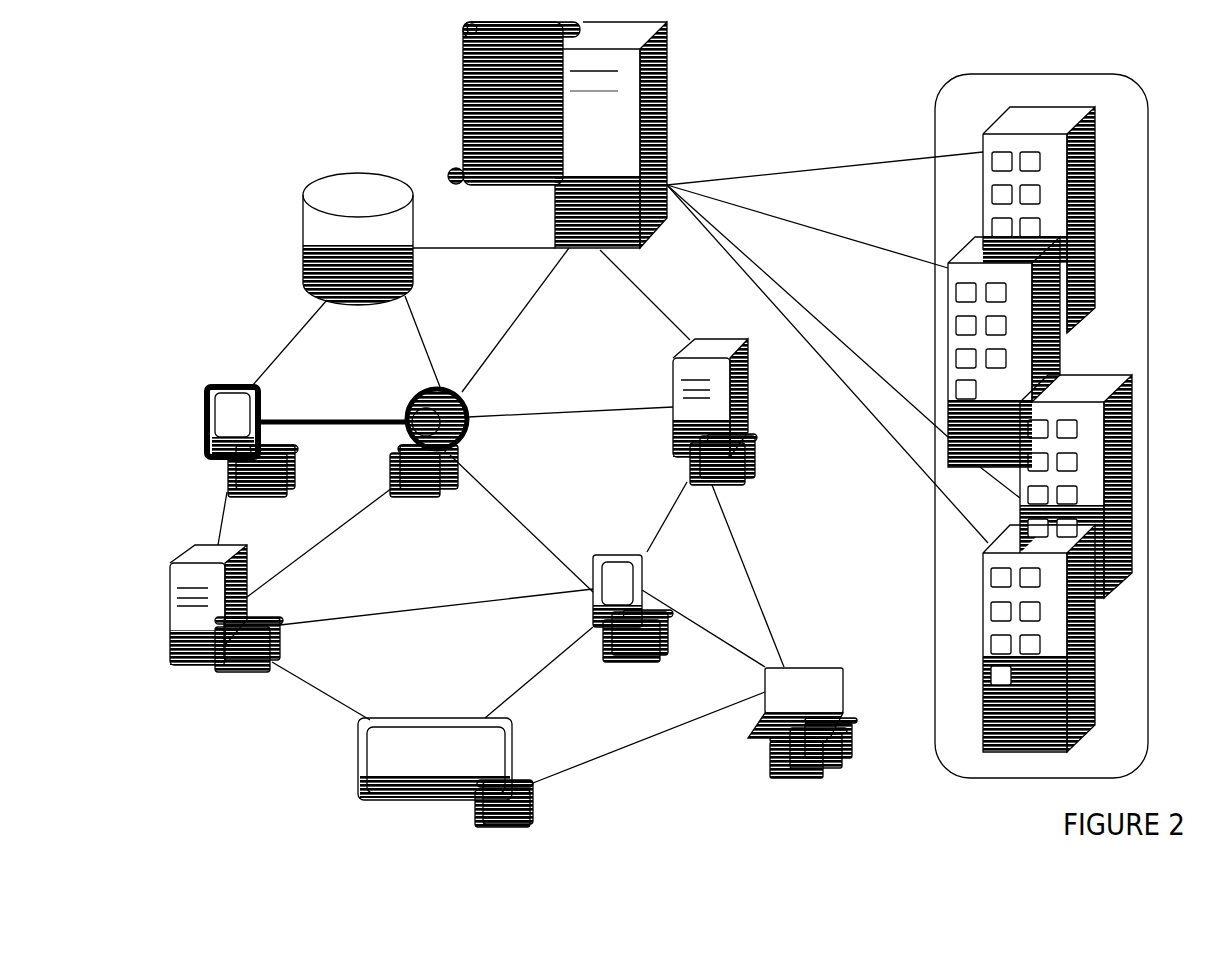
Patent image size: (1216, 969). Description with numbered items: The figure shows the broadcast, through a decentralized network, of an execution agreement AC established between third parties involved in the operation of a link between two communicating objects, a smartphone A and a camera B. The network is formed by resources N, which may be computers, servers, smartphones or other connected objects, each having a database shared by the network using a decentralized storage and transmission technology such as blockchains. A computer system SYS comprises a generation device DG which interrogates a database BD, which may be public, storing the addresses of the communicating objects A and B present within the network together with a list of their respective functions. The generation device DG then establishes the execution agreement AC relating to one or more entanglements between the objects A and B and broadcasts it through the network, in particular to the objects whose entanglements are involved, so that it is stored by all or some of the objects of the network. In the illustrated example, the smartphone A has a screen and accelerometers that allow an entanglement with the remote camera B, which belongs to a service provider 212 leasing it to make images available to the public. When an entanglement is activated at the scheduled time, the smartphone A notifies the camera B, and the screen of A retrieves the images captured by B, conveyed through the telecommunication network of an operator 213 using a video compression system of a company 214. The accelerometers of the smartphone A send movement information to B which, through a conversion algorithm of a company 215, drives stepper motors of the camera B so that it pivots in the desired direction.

The service provider 212 is at (1098, 183).
The operator 213 is at (1065, 357).
The company 214 is at (1133, 545).
The company 215 is at (1097, 697).
The execution agreement AC is at (463, 125).
The generation device DG is at (611, 135).
The database BD is at (358, 239).
The resources N is at (232, 388).
The smartphone A is at (237, 442).
The camera B is at (437, 443).
The computer system SYS is at (783, 515).